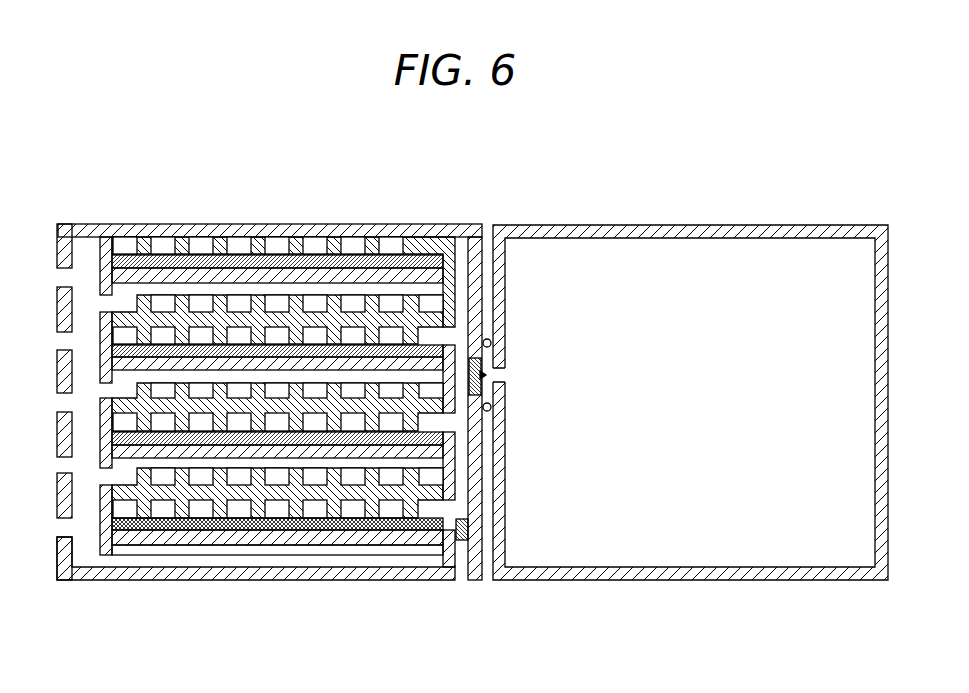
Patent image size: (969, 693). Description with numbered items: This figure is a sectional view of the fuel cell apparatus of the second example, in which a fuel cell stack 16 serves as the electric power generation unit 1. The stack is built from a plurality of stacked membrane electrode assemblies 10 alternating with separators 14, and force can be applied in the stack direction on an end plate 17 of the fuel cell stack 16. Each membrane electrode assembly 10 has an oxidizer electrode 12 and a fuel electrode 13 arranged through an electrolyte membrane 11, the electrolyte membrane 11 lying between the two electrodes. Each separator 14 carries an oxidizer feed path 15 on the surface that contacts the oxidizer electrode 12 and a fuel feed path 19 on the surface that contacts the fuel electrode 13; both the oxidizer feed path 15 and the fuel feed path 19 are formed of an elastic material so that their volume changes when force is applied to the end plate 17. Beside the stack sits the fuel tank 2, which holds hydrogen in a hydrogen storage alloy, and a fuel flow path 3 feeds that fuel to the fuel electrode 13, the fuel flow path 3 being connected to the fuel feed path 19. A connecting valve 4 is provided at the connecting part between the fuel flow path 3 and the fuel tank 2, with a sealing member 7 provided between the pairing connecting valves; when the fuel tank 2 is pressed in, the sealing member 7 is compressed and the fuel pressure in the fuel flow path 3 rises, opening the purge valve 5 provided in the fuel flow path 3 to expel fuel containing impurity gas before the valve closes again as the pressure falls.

The electric power generation unit 1 is at (91, 225).
The fuel tank 2 is at (775, 583).
The fuel flow path 3 is at (462, 460).
The connecting valve 4 is at (506, 377).
The purge valve 5 is at (462, 541).
The sealing member 7 is at (491, 343).
The membrane electrode assembly 10 is at (277, 605).
The electrolyte membrane 11 is at (232, 540).
The oxidizer electrode 12 is at (317, 651).
The fuel electrode 13 is at (248, 530).
The separator 14 is at (278, 300).
The oxidizer feed path 15 is at (158, 475).
The fuel cell stack 16 is at (43, 580).
The end plate 17 is at (335, 225).
The fuel feed path 19 is at (167, 510).